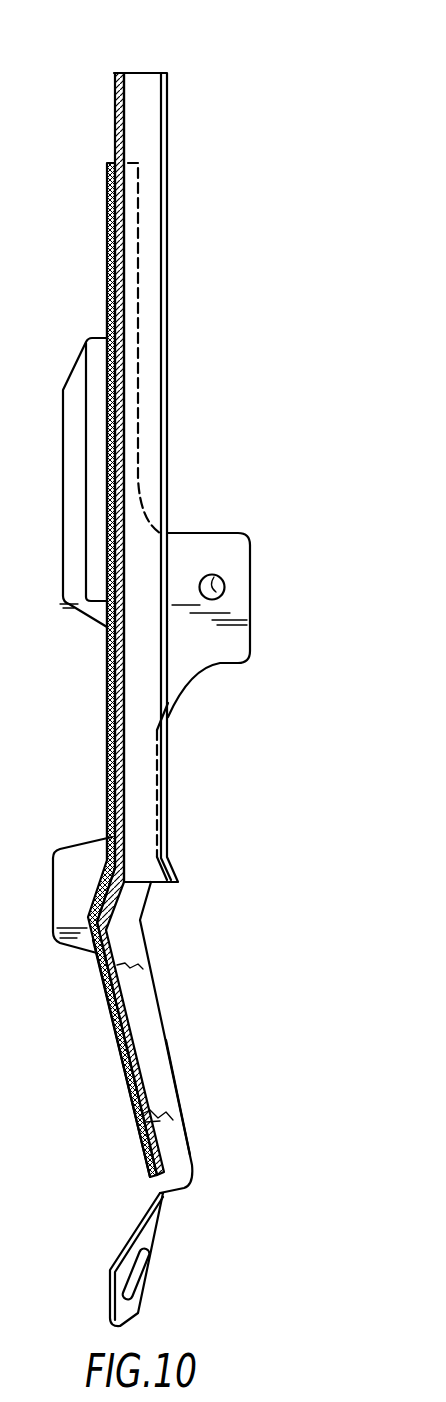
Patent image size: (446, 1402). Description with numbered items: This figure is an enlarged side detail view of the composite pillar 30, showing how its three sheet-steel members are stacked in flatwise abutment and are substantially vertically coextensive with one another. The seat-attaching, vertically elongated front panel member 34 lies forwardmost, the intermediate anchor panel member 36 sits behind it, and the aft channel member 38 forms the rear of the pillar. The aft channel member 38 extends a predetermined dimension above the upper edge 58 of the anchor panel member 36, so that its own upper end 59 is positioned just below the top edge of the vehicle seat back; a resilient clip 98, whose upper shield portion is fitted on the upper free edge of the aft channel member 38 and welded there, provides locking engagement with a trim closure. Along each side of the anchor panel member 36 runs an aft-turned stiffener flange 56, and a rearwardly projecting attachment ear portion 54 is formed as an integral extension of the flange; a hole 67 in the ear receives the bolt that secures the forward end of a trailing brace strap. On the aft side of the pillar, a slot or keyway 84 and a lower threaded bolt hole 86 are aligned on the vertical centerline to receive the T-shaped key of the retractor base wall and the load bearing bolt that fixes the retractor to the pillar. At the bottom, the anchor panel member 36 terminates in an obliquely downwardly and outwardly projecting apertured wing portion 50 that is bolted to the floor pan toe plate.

The composite pillar 30 is at (199, 250).
The front panel member 34 is at (110, 795).
The intermediate anchor panel member 36 is at (158, 995).
The aft channel member 38 is at (168, 430).
The apertured wing portion 50 is at (168, 1238).
The attachment ear portion 54 is at (202, 545).
The stiffener flange 56 is at (165, 1065).
The upper edge of anchor panel member 58 is at (112, 157).
The upper end of aft channel member 59 is at (117, 77).
The hole 67 is at (225, 588).
The slot or keyway 84 is at (126, 1062).
The lower threaded bolt hole 86 is at (170, 1110).
The resilient clip 98 is at (117, 143).